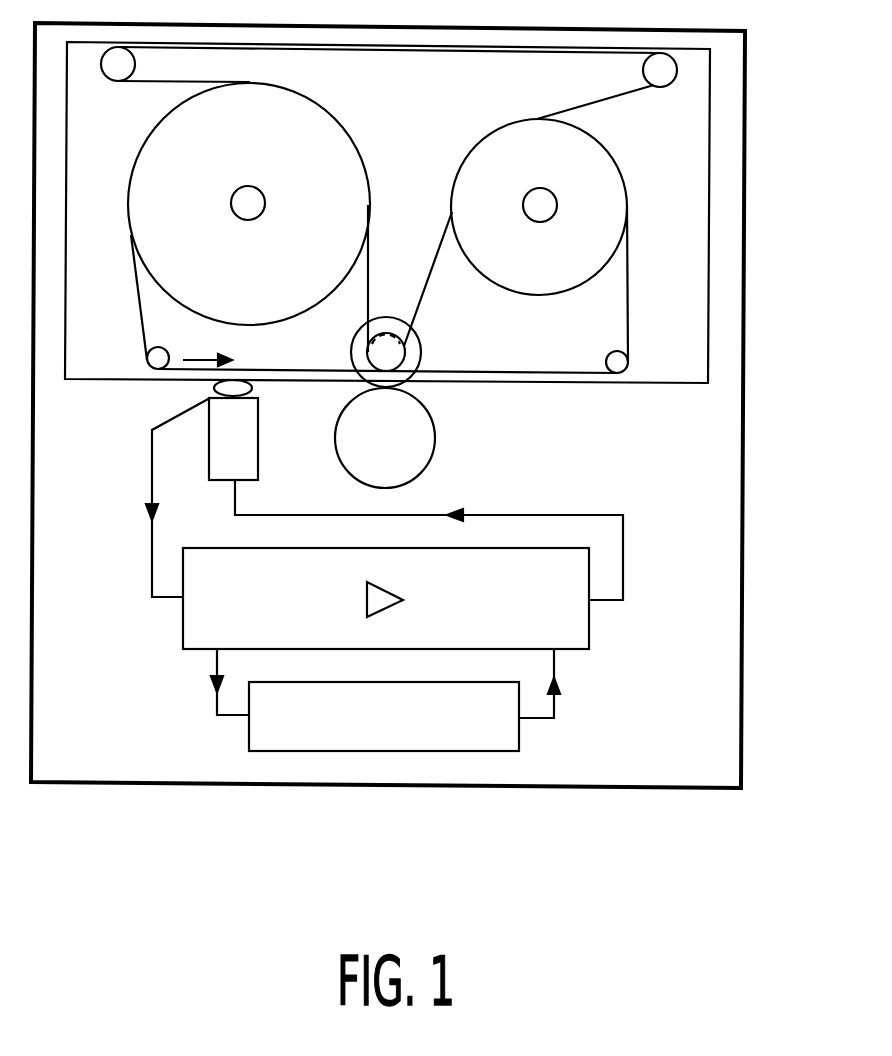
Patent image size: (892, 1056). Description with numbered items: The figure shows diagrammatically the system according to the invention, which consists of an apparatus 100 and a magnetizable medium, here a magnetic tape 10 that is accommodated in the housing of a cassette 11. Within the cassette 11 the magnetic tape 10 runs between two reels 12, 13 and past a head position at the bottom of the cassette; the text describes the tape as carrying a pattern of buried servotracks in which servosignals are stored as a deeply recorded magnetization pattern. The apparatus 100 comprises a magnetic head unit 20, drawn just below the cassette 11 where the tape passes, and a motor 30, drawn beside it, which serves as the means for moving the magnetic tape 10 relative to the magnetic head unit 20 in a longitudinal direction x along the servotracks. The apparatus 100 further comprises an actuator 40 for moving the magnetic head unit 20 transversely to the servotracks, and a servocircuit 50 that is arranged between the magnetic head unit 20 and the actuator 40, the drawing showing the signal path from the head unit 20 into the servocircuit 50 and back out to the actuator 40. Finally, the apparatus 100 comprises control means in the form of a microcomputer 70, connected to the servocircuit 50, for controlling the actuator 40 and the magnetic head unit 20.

The magnetic tape 10 is at (141, 330).
The cassette 11 is at (710, 186).
The supply reel 12 is at (248, 186).
The take-up reel 13 is at (540, 188).
The magnetic head unit 20 is at (252, 390).
The motor 30 is at (435, 440).
The actuator 40 is at (209, 451).
The servocircuit 50 is at (183, 628).
The microcomputer 70 is at (249, 734).
The apparatus 100 is at (742, 486).